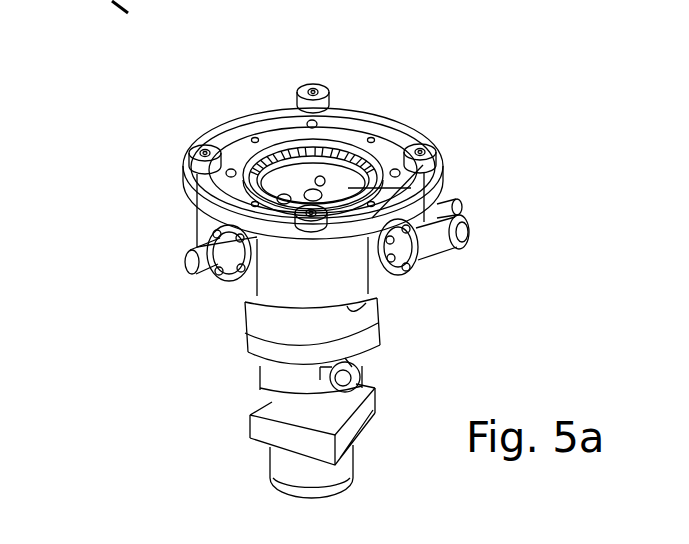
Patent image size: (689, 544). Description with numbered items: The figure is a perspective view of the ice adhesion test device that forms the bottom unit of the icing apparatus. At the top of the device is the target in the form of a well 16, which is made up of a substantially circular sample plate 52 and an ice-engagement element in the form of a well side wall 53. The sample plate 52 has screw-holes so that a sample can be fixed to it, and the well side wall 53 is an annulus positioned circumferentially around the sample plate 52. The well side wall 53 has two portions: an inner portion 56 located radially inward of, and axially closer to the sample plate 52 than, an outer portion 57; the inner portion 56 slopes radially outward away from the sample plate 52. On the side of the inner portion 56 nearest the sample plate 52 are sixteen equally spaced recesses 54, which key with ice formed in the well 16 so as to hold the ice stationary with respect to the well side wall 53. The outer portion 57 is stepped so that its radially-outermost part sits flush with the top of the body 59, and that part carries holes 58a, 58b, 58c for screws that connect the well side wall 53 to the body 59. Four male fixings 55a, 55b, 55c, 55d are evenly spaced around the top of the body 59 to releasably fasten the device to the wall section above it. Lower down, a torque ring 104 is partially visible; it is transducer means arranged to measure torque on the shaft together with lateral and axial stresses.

The well 16 is at (390, 153).
The sample plate 52 is at (458, 205).
The well side wall 53 is at (240, 147).
The recesses 54 is at (338, 180).
The male fixing 55a is at (190, 157).
The male fixing 55b is at (313, 82).
The male fixing 55c is at (440, 152).
The male fixing 55d is at (317, 228).
The inner portion 56 is at (327, 148).
The outer portion 57 is at (263, 160).
The hole 58a is at (228, 176).
The hole 58b is at (308, 125).
The hole 58c is at (398, 175).
The body 59 is at (270, 277).
The torque ring 104 is at (350, 374).